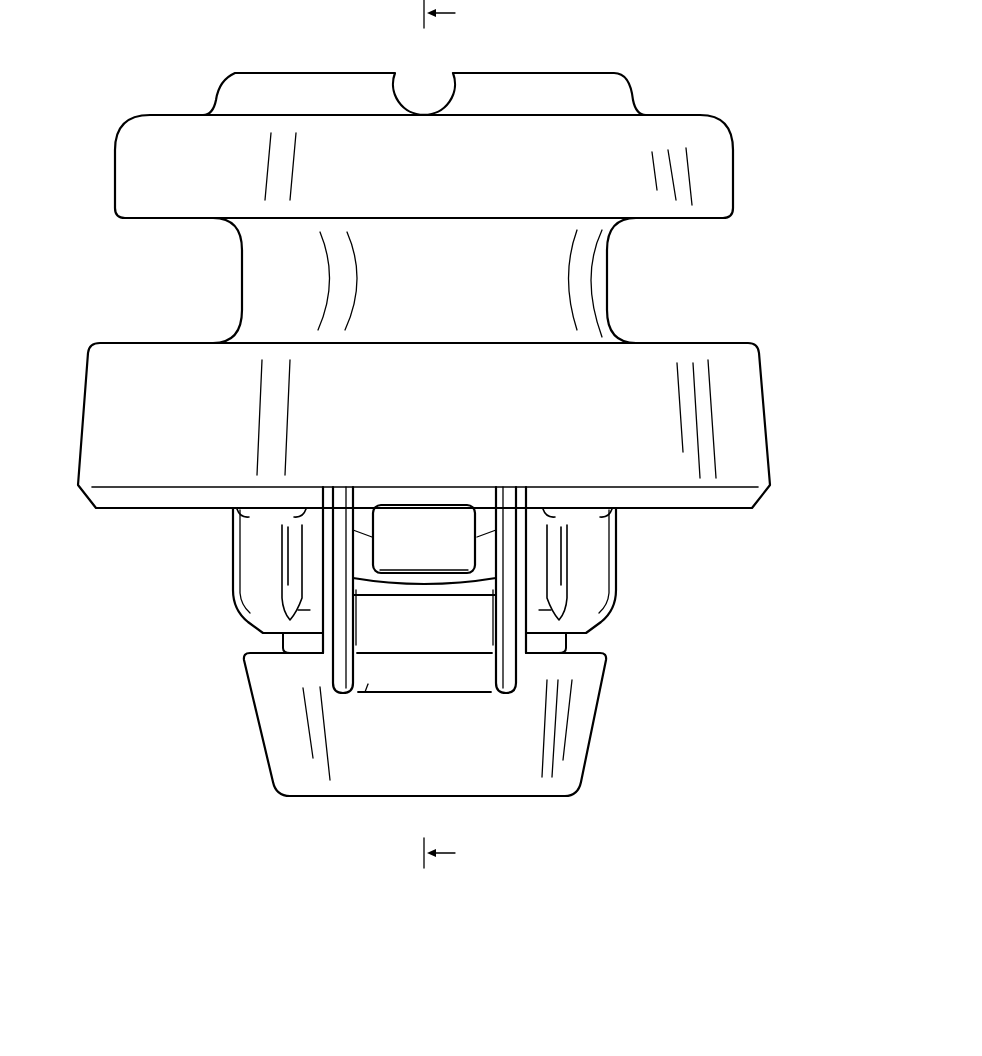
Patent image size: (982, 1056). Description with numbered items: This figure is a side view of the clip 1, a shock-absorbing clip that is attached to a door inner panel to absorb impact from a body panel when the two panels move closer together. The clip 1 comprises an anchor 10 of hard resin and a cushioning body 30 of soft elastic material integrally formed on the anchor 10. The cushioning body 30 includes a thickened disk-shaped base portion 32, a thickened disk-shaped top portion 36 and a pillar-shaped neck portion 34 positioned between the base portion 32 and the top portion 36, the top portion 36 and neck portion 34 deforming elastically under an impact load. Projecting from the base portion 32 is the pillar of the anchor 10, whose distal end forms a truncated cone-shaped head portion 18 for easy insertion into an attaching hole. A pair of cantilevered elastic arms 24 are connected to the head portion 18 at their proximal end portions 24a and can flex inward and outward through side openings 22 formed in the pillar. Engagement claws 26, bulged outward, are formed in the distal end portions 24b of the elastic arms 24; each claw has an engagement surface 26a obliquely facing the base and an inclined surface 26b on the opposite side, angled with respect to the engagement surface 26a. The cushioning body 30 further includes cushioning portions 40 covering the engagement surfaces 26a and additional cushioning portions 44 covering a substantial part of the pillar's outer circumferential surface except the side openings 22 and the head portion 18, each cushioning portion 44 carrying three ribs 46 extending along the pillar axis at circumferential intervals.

The clip 1 is at (779, 212).
The anchor 10 is at (211, 773).
The head portion 18 is at (322, 750).
The side openings 22 is at (516, 583).
The elastic arms 24 is at (395, 622).
The proximal end portions 24a is at (365, 692).
The distal end portions 24b is at (372, 593).
The engagement claws 26 is at (470, 592).
The engagement surfaces 26a is at (354, 553).
The inclined surfaces 26b is at (428, 622).
The cushioning body 30 is at (751, 120).
The base portion 32 is at (125, 420).
The neck portion 34 is at (527, 284).
The top portion 36 is at (162, 170).
The cushioning portions 40 is at (418, 540).
The cushioning portions 44 is at (590, 560).
The ribs 46 is at (295, 522).